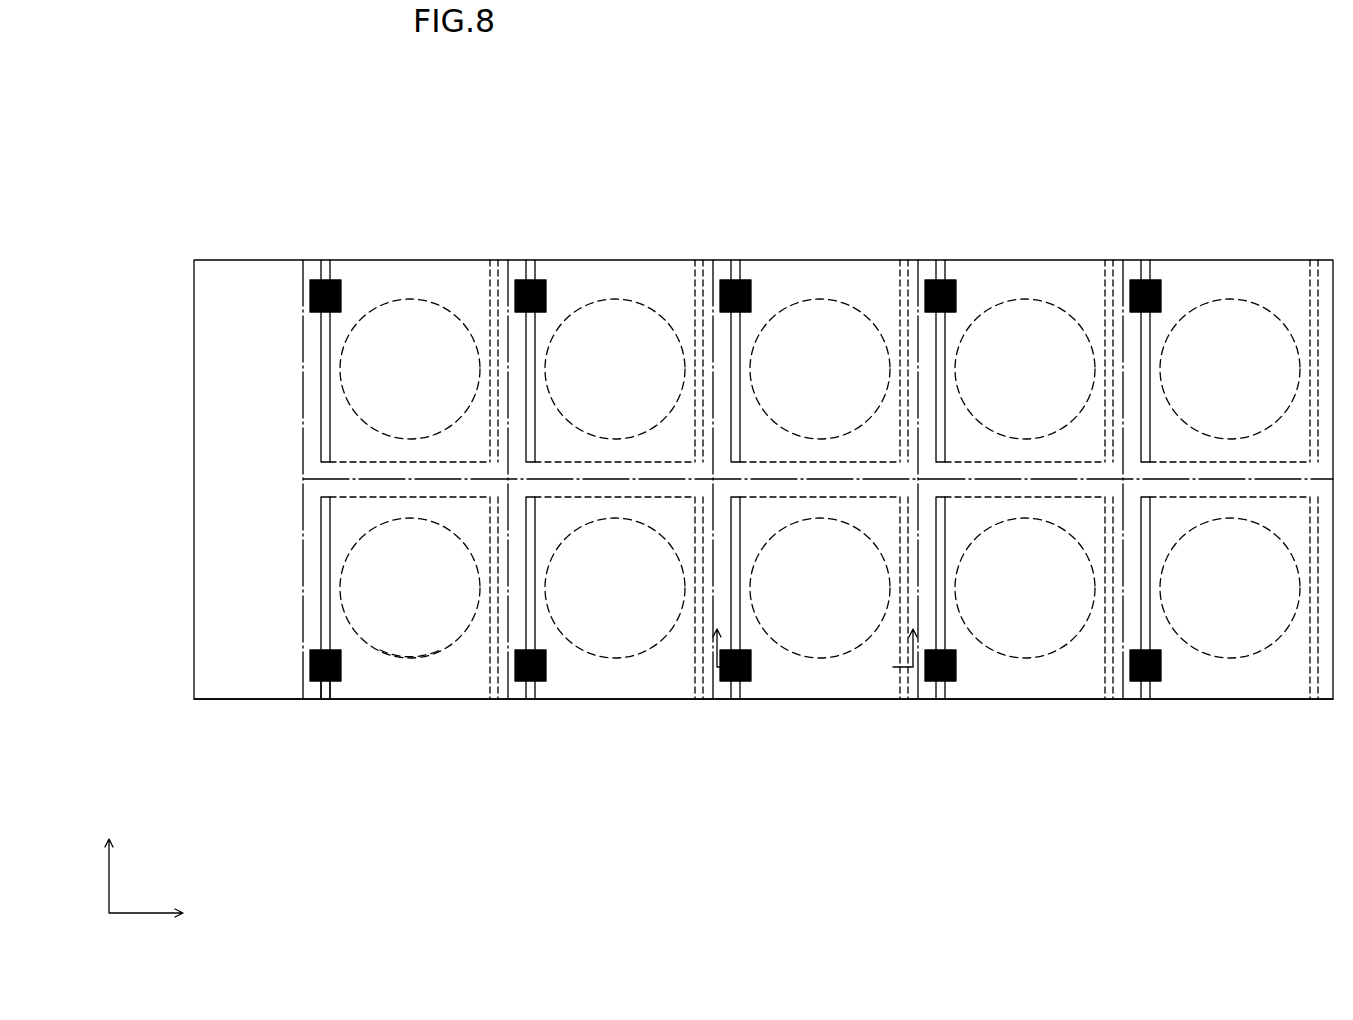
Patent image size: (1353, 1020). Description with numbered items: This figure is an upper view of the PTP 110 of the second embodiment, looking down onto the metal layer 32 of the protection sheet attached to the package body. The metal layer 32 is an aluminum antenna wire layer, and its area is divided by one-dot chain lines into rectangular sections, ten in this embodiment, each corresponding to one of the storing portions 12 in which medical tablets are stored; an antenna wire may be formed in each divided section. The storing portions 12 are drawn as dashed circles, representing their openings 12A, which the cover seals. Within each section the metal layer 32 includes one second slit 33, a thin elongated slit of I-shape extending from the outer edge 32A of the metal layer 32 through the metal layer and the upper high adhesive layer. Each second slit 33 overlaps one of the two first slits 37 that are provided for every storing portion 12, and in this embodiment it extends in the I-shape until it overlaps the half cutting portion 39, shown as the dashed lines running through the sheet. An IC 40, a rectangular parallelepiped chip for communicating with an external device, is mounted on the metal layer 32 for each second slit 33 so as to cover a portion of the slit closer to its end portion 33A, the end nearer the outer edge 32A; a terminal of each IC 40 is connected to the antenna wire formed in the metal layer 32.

The PTP 110 is at (787, 73).
The storing portion 12 is at (443, 622).
The opening 12A is at (432, 652).
The metal layer 32 is at (218, 648).
The outer edge 32A is at (577, 700).
The second slit 33 is at (326, 586).
The end portion 33A is at (328, 698).
The first slit 37 is at (489, 284).
The half cutting portion 39 is at (368, 497).
The IC 40 is at (310, 665).